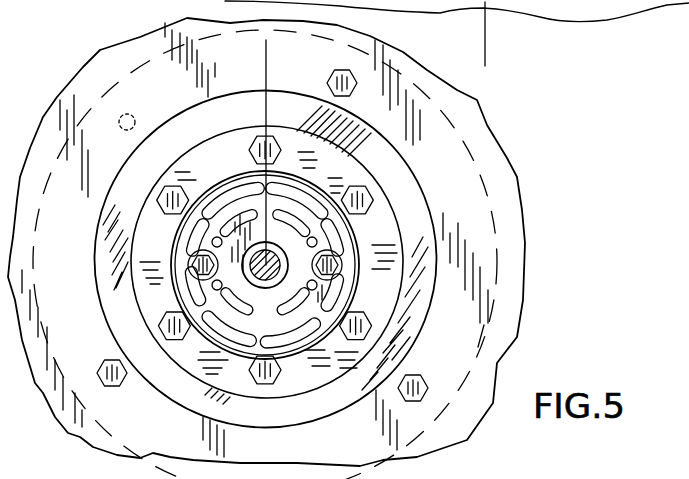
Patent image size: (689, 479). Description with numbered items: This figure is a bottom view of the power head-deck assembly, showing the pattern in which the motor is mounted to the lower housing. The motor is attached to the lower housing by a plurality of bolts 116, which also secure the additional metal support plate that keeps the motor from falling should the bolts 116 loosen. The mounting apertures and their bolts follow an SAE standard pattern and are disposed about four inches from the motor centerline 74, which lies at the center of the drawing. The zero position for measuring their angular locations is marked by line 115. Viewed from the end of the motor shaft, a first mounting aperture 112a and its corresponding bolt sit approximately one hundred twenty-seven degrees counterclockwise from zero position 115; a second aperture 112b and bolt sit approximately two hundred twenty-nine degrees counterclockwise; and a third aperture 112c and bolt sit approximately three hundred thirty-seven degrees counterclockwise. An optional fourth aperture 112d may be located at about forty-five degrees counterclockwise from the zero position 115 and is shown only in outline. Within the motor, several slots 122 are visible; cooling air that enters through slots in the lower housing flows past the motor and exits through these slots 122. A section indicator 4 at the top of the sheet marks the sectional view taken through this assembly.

The section line 4- 4 is at (440, 56).
The motor centerline 74 is at (243, 282).
The first mounting aperture 112a is at (112, 388).
The second aperture 112b is at (416, 394).
The third aperture 112c is at (328, 86).
The optional fourth aperture 112d is at (120, 113).
The zero position line 115 is at (266, 80).
The bolts 116 is at (255, 146).
The slots in the motor 122 is at (240, 192).